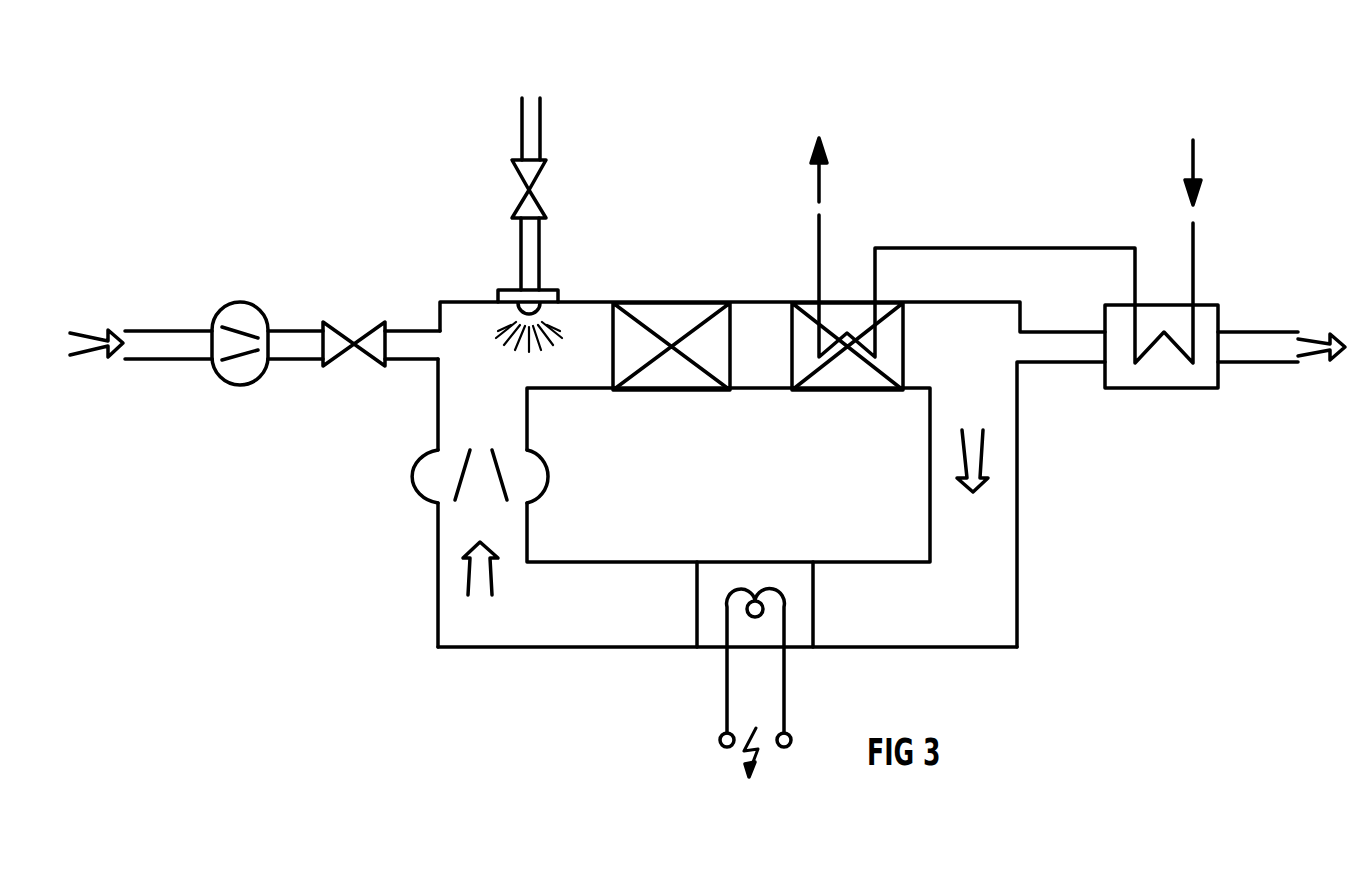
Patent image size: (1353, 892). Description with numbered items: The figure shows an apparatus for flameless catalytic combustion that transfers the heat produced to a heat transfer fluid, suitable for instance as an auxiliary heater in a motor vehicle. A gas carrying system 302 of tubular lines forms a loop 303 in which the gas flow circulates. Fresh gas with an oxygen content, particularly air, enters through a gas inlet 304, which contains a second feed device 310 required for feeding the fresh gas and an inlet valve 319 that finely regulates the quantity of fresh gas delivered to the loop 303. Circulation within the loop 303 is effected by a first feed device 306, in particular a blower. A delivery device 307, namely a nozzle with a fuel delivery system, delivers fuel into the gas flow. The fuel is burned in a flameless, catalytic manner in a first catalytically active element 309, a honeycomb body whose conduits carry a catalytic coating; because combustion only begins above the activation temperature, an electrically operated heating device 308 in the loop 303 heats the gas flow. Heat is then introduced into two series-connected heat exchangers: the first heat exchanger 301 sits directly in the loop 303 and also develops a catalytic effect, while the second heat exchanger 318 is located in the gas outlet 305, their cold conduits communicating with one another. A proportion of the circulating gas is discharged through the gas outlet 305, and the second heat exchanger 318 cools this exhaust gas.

The first heat exchanger 301 is at (843, 322).
The gas carrying system 302 is at (455, 300).
The loop 303 is at (565, 663).
The gas inlet 304 is at (297, 330).
The gas outlet 305 is at (1250, 375).
The first feed device 306 is at (410, 480).
The delivery device 307 is at (540, 257).
The heating device 308 is at (820, 670).
The first catalytically active element 309 is at (667, 314).
The second feed device 310 is at (236, 400).
The second heat exchanger 318 is at (1205, 315).
The inlet valve 319 is at (330, 388).